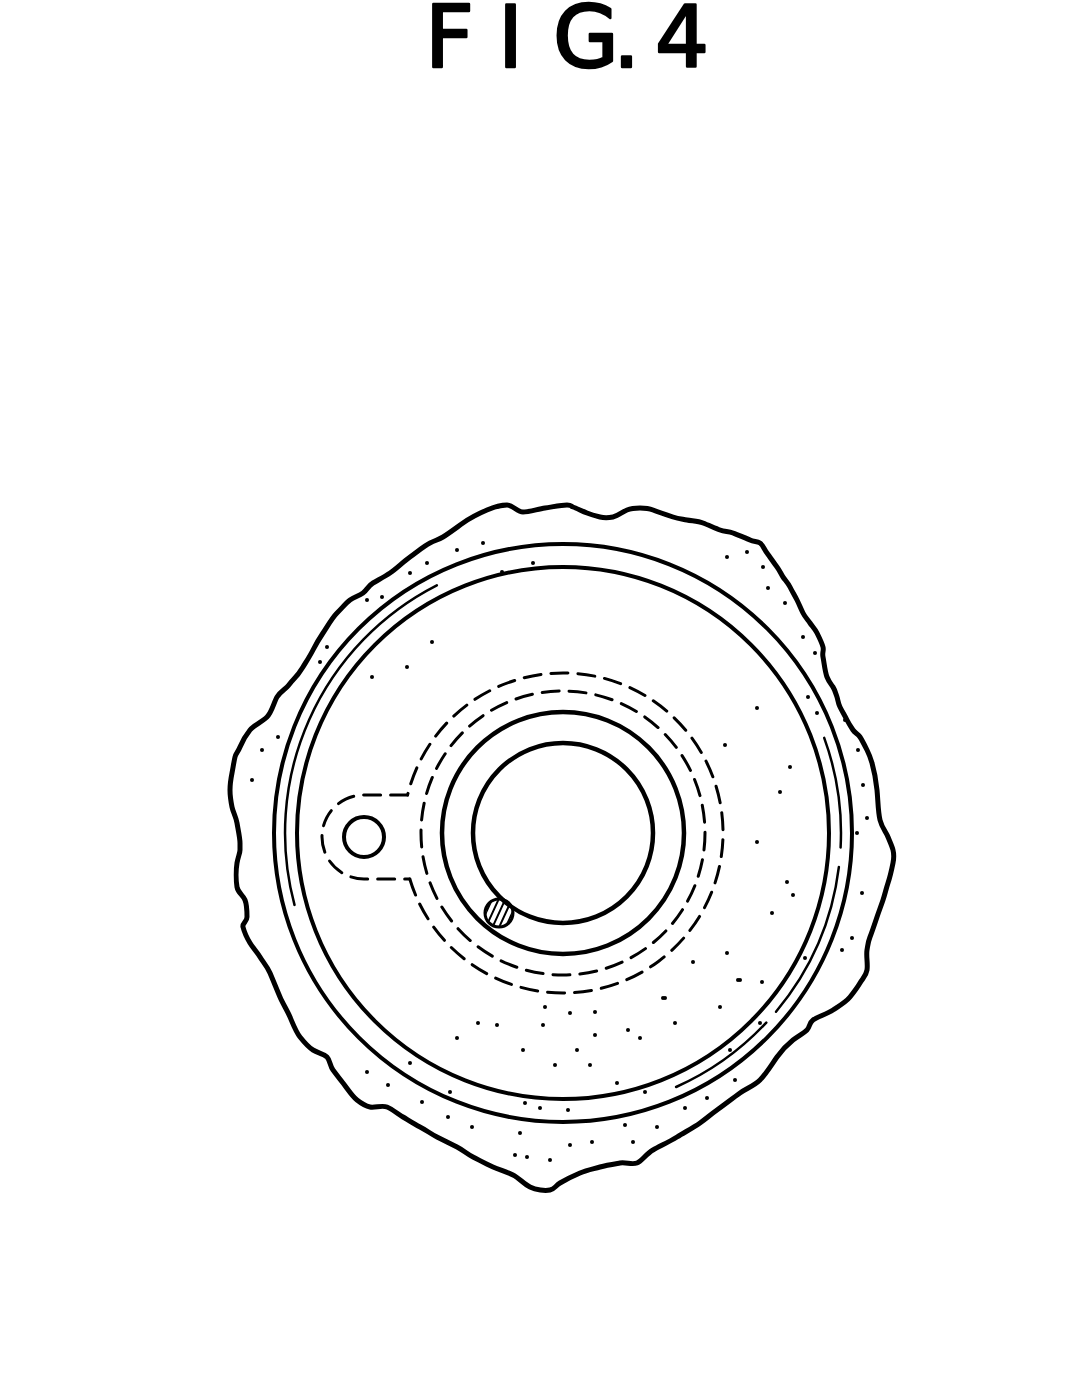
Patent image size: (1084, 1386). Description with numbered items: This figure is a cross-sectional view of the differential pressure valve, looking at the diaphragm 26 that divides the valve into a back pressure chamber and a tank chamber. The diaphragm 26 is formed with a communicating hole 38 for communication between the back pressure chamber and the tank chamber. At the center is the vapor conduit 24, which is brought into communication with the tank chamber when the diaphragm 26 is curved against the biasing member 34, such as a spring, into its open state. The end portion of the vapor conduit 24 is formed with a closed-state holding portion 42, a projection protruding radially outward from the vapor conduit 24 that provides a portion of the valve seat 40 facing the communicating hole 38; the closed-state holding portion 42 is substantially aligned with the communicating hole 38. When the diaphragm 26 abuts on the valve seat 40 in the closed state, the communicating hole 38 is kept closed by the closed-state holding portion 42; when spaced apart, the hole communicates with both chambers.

The vapor conduit 24 is at (565, 697).
The diaphragm 26 is at (403, 558).
The biasing member 34 is at (657, 773).
The communicating hole 38 is at (345, 840).
The valve seat 40 is at (533, 682).
The closed-state holding portion 42 is at (377, 795).